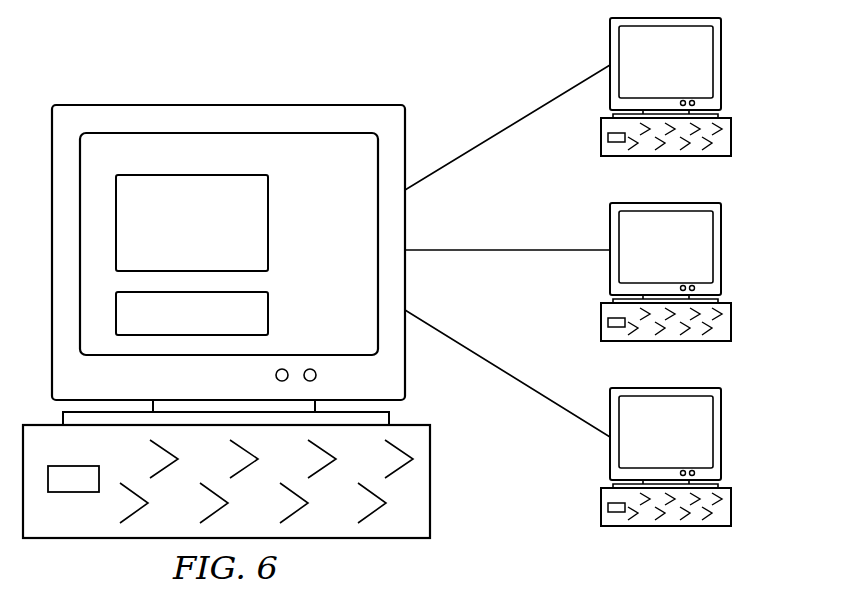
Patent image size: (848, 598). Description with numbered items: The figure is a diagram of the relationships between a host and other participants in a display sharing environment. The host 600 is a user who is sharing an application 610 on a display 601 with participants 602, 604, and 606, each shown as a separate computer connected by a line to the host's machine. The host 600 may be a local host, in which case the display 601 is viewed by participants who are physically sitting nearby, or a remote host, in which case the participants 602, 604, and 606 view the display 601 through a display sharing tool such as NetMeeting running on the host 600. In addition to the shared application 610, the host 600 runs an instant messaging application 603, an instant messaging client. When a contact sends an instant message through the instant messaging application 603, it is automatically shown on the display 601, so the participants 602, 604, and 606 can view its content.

The host 600 is at (214, 100).
The display 601 is at (345, 168).
The instant messaging application 603 is at (268, 222).
The application 610 is at (268, 318).
The participant 602 is at (721, 65).
The participant 604 is at (721, 238).
The participant 606 is at (721, 435).